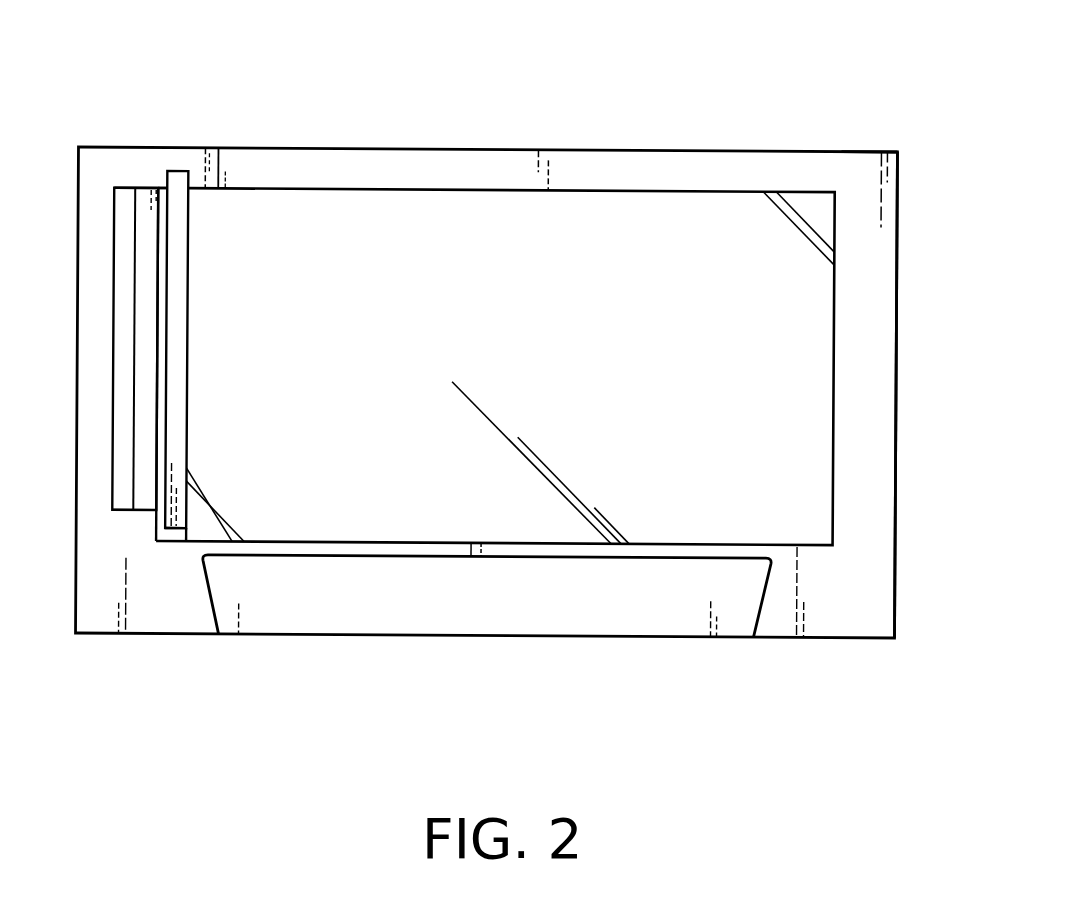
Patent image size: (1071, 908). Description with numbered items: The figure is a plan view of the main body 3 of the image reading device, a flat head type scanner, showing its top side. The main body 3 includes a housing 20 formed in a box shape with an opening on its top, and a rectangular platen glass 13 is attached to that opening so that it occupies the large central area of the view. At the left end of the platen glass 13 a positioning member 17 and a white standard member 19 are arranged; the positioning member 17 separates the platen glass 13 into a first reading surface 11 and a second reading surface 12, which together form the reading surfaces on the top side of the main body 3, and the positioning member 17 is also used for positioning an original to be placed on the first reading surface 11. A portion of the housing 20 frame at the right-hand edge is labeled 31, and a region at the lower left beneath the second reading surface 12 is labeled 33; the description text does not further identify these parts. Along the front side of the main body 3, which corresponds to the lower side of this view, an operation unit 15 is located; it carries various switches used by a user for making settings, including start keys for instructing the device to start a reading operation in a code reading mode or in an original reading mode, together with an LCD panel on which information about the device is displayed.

The main body 3 is at (491, 358).
The housing 20 is at (612, 142).
The frame side wall 31 is at (820, 168).
The platen glass 13 is at (188, 298).
The first reading surface 11 is at (213, 314).
The second reading surface 12 is at (142, 190).
The support portion 33 is at (132, 527).
The white standard member 19 is at (162, 505).
The positioning member 17 is at (173, 525).
The operation unit 15 is at (535, 612).